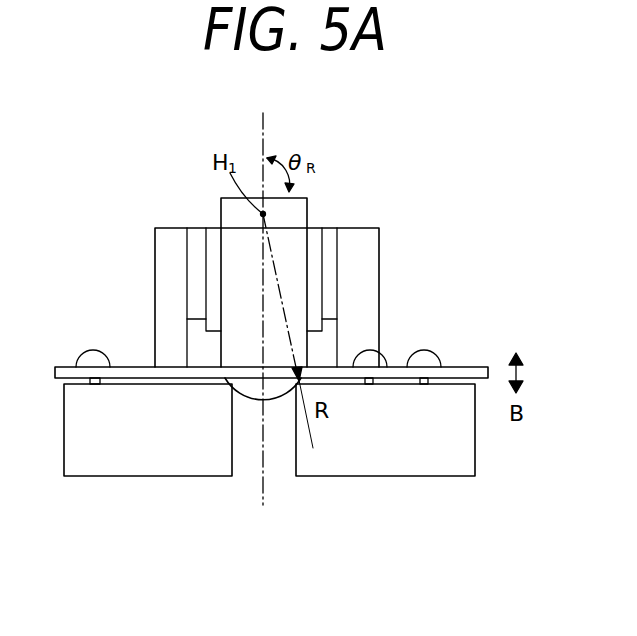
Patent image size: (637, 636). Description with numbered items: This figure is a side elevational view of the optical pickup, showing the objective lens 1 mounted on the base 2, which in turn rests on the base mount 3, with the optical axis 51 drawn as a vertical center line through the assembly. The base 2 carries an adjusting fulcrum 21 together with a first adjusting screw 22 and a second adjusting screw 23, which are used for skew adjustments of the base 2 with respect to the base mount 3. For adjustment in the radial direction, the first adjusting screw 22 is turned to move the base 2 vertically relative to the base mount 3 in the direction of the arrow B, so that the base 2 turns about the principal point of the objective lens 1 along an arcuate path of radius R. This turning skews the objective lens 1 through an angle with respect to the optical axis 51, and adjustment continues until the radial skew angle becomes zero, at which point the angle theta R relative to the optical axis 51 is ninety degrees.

The objective lens 1 is at (221, 208).
The base 2 is at (470, 367).
The base mount 3 is at (475, 456).
The adjusting fulcrum 21 is at (86, 356).
The first adjusting screw 22 is at (425, 351).
The second adjusting screw 23 is at (383, 360).
The optical axis 51 is at (263, 458).